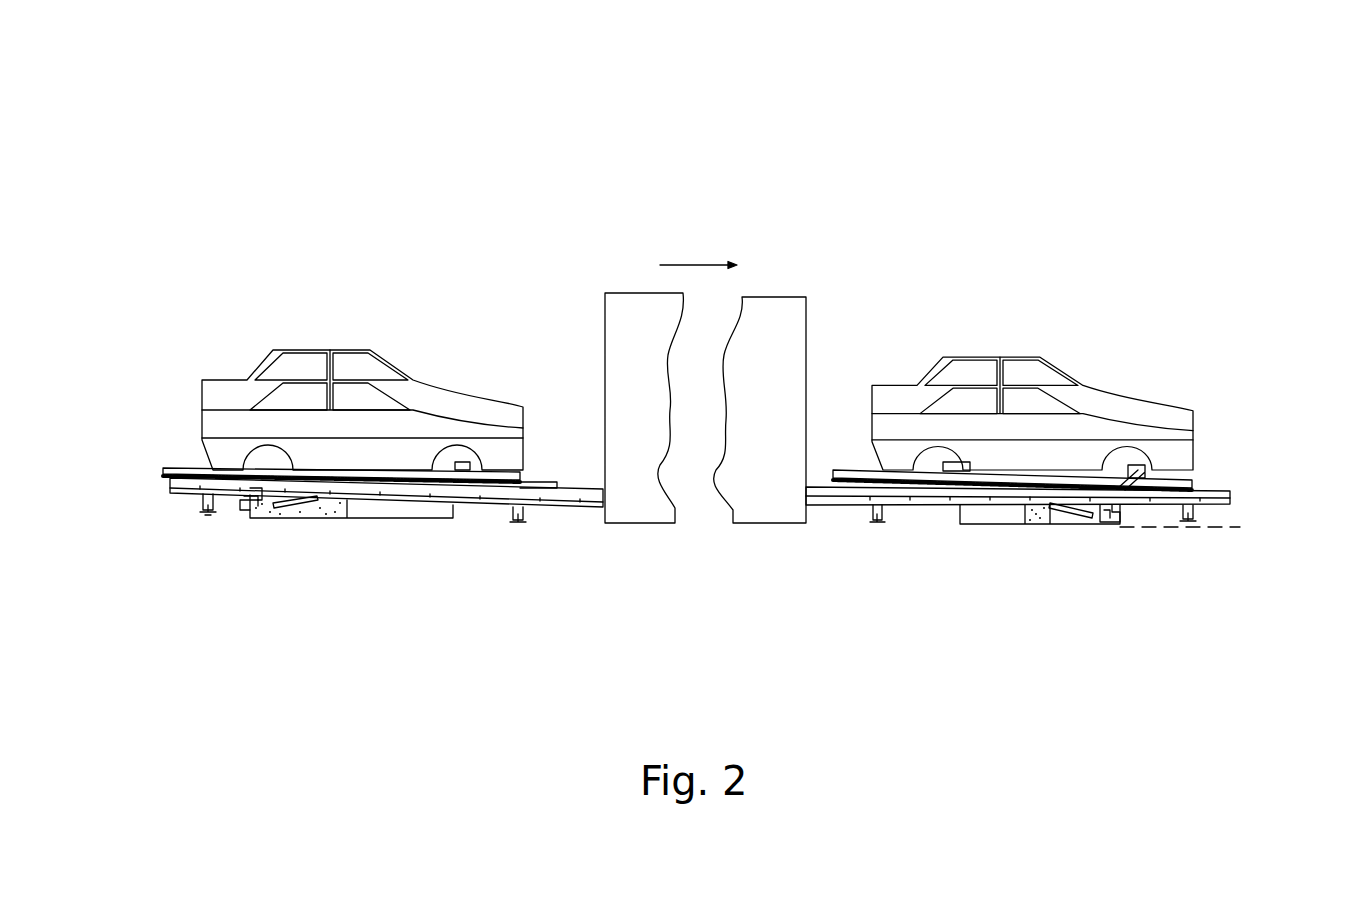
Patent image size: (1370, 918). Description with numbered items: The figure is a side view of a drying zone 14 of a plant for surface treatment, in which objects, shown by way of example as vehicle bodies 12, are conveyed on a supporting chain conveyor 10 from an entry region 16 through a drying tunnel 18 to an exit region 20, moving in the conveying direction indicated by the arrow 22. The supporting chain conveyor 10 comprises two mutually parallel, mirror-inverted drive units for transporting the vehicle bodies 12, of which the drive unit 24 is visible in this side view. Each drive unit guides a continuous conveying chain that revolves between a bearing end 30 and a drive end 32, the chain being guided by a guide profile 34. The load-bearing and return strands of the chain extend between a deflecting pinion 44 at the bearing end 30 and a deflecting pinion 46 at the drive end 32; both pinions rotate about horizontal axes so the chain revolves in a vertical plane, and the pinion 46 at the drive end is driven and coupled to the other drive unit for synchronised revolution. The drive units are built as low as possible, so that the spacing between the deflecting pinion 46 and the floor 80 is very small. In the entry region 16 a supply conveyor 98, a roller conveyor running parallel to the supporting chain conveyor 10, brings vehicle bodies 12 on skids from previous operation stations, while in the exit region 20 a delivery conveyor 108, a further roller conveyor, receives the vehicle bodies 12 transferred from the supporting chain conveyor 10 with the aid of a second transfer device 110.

The supporting chain conveyor 10 is at (572, 516).
The vehicle bodies 12 is at (218, 423).
The drying zone 14 is at (856, 141).
The entry region 16 is at (325, 250).
The drying tunnel 18 is at (793, 286).
The exit region 20 is at (1053, 271).
The arrow 22 is at (686, 256).
The drive unit 24 is at (463, 514).
The bearing end 30 is at (292, 527).
The drive end 32 is at (1069, 532).
The guide profile 34 is at (826, 514).
The deflecting pinion 44 is at (240, 502).
The deflecting pinion 46 is at (1127, 508).
The floor 80 is at (1239, 512).
The supply conveyor 98 is at (183, 501).
The delivery conveyor 108 is at (1170, 514).
The second transfer device 110 is at (1148, 473).